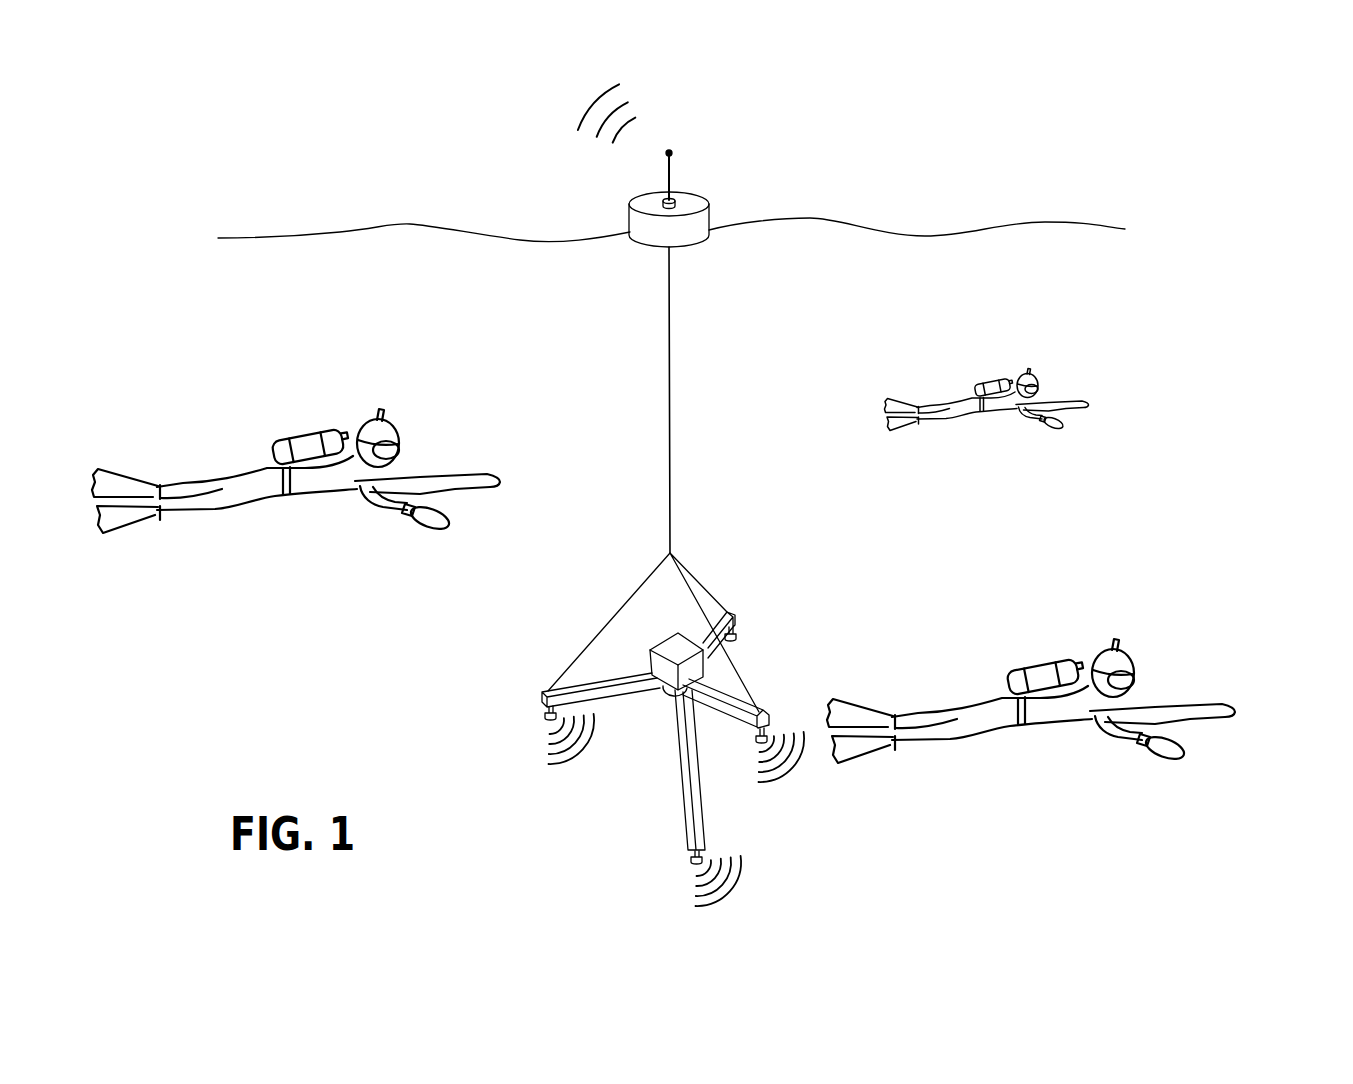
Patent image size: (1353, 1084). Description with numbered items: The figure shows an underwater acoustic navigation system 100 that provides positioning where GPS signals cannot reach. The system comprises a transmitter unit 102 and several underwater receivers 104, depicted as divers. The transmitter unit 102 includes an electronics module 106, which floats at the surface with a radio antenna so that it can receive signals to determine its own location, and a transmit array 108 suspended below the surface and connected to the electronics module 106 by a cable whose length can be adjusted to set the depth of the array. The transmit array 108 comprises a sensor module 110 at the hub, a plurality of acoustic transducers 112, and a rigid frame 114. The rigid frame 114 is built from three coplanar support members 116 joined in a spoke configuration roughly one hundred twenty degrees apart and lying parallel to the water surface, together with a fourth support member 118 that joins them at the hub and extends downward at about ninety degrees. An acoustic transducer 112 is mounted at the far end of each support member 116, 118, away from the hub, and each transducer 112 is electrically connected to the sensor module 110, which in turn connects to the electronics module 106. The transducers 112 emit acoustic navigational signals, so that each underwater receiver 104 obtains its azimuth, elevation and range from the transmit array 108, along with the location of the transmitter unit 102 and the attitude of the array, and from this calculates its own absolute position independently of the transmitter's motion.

The underwater acoustic navigation system 100 is at (262, 182).
The transmitter unit 102 is at (654, 352).
The underwater receiver 104 is at (423, 507).
The electronics module 106 is at (697, 198).
The transmit array 108 is at (731, 580).
The sensor module 110 is at (658, 640).
The acoustic transducers 112 is at (547, 727).
The rigid frame 114 is at (608, 700).
The support members 116 is at (585, 680).
The fourth support member 118 is at (700, 806).